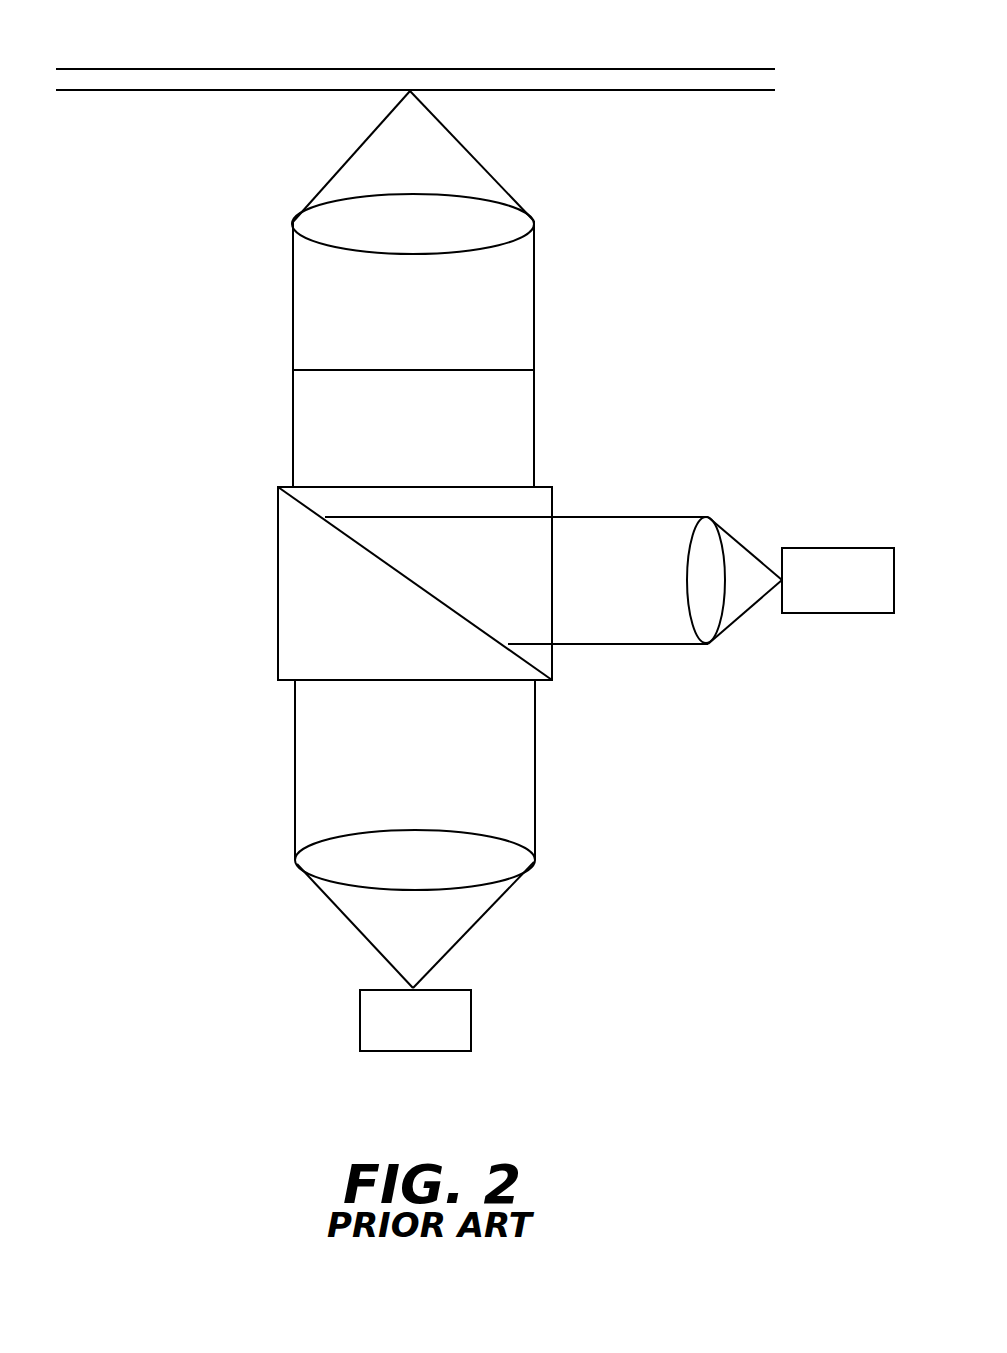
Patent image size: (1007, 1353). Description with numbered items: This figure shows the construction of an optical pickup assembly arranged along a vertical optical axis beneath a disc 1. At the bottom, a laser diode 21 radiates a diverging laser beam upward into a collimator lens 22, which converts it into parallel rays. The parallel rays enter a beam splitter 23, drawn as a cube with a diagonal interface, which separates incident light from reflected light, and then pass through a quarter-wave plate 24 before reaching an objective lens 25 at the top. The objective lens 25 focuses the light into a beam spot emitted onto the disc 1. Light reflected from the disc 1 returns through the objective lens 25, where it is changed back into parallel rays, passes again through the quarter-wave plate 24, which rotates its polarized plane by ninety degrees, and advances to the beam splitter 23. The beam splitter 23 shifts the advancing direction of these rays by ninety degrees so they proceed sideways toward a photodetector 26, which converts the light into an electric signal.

The disc 1 is at (270, 69).
The laser diode 21 is at (360, 1016).
The collimator lens 22 is at (316, 857).
The beam splitter 23 is at (290, 605).
The quarter-wave plate 24 is at (312, 371).
The objective lens 25 is at (320, 215).
The photodetector 26 is at (818, 548).